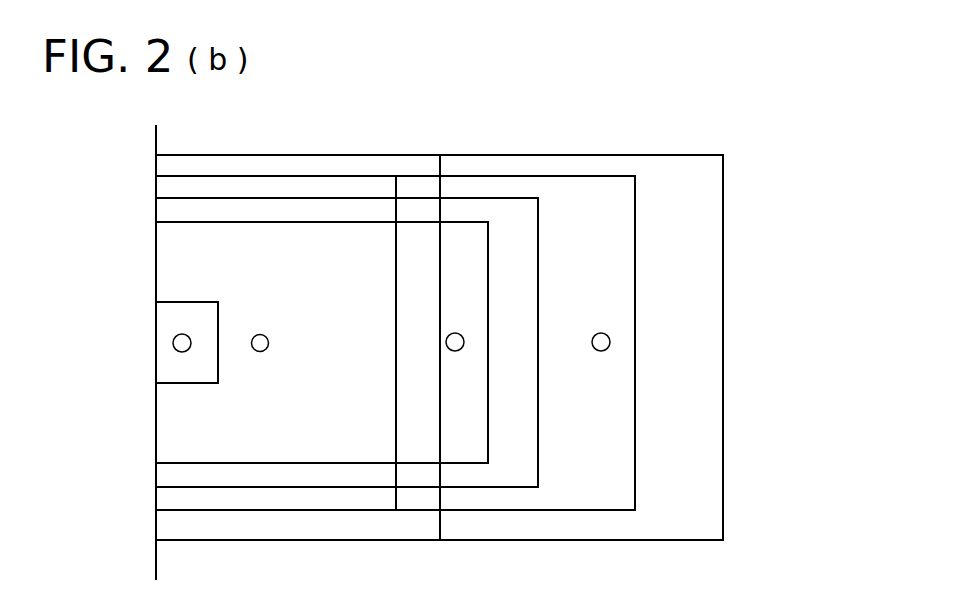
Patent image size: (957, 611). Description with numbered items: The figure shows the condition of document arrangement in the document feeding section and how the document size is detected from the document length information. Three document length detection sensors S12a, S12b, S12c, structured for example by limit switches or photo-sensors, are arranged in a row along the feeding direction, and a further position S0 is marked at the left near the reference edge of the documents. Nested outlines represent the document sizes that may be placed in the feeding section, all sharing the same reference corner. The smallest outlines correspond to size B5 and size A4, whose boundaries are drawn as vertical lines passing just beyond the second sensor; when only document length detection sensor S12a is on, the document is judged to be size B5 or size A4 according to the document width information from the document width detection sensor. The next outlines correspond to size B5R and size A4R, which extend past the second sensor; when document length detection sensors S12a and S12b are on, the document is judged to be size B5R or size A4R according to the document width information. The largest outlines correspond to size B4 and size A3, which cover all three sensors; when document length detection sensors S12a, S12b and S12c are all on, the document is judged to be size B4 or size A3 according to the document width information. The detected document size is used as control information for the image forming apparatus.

The size A3 is at (723, 440).
The size B4 is at (635, 435).
The size B5R is at (488, 395).
The size A4R is at (540, 455).
The size B5 is at (396, 500).
The size A4 is at (440, 518).
The start position S0 is at (172, 344).
The document length detection sensor S12a is at (261, 334).
The document length detection sensor S12b is at (455, 333).
The document length detection sensor S12c is at (600, 333).